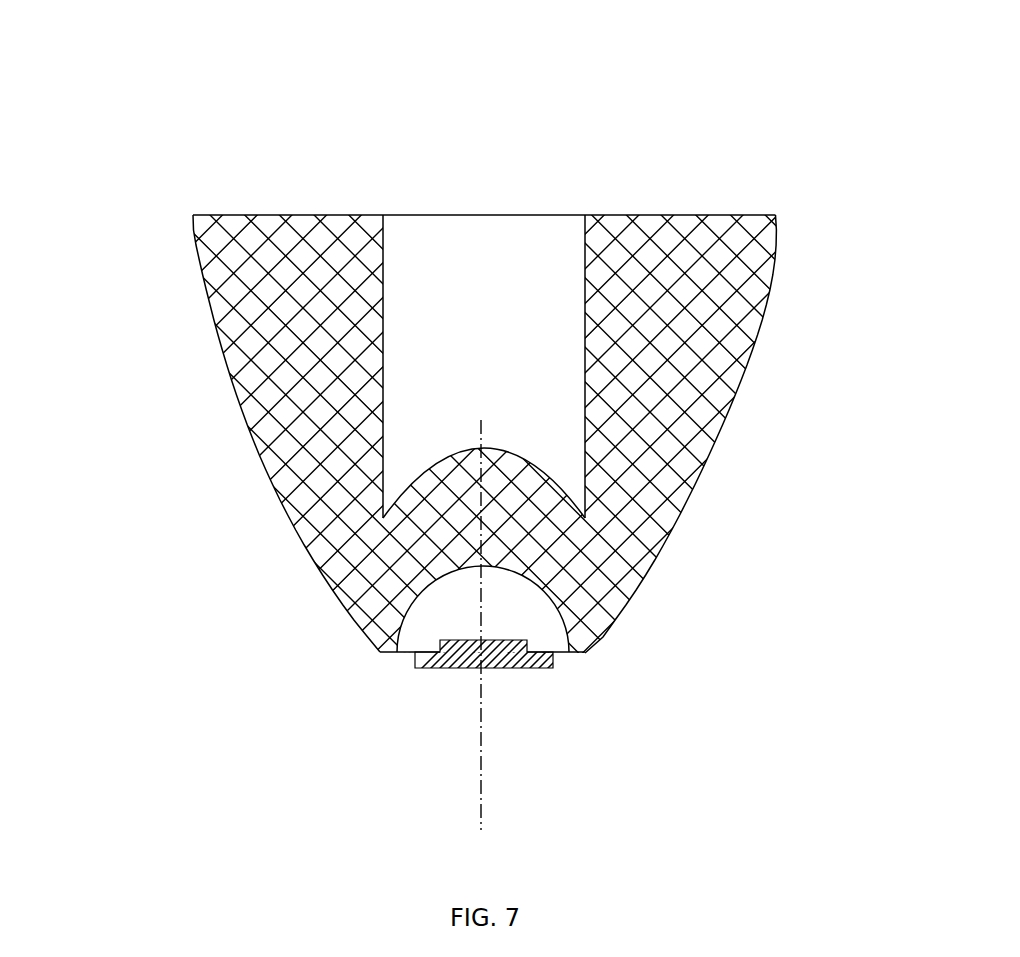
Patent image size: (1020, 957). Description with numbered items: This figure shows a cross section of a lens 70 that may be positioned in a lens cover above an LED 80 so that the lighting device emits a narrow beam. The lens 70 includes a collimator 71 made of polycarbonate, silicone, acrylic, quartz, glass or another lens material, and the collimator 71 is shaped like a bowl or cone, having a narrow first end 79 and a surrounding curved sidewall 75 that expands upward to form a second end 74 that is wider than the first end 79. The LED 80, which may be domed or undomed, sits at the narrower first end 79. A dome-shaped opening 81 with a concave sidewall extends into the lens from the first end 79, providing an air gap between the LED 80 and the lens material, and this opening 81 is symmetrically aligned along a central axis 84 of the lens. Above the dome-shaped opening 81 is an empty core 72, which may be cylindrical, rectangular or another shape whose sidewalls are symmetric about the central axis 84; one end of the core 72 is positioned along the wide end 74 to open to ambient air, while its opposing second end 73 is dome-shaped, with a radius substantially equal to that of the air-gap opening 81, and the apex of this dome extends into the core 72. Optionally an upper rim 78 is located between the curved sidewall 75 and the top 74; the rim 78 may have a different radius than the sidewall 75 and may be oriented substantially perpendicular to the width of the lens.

The lens 70 is at (273, 68).
The collimator 71 is at (346, 214).
The empty core 72 is at (525, 262).
The second end of the core 73 is at (462, 449).
The second end 74 is at (448, 214).
The surrounding sidewall 75 is at (252, 427).
The upper rim 78 is at (778, 246).
The first end 79 is at (581, 654).
The LED 80 is at (523, 670).
The dome-shaped opening 81 is at (432, 607).
The central axis 84 is at (478, 797).